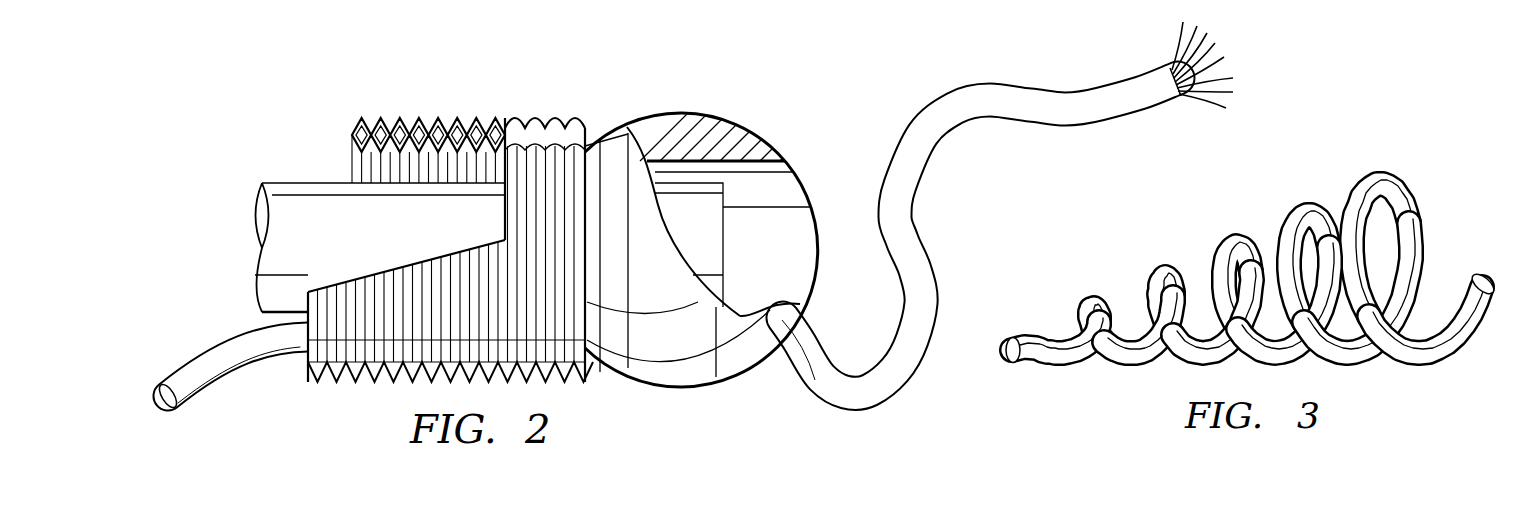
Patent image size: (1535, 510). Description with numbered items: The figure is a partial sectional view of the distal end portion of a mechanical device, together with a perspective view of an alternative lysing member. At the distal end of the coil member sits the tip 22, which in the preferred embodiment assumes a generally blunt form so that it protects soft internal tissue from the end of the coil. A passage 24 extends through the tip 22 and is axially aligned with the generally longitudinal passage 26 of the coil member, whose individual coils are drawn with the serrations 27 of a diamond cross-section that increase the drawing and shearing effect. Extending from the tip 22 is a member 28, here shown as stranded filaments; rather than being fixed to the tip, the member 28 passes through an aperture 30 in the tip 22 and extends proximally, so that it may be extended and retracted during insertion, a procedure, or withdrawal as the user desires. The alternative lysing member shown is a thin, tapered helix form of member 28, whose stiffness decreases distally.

In FIG. 2, the tip 22 is at (737, 119).
In FIG. 2, the passage 24 is at (723, 235).
In FIG. 2, the longitudinal passage 26 is at (352, 160).
In FIG. 2, the serrations 27 is at (436, 118).
In FIG. 2, the member 28 is at (920, 113).
In FIG. 3, the member 28 is at (1158, 266).
In FIG. 2, the aperture 30 is at (800, 362).